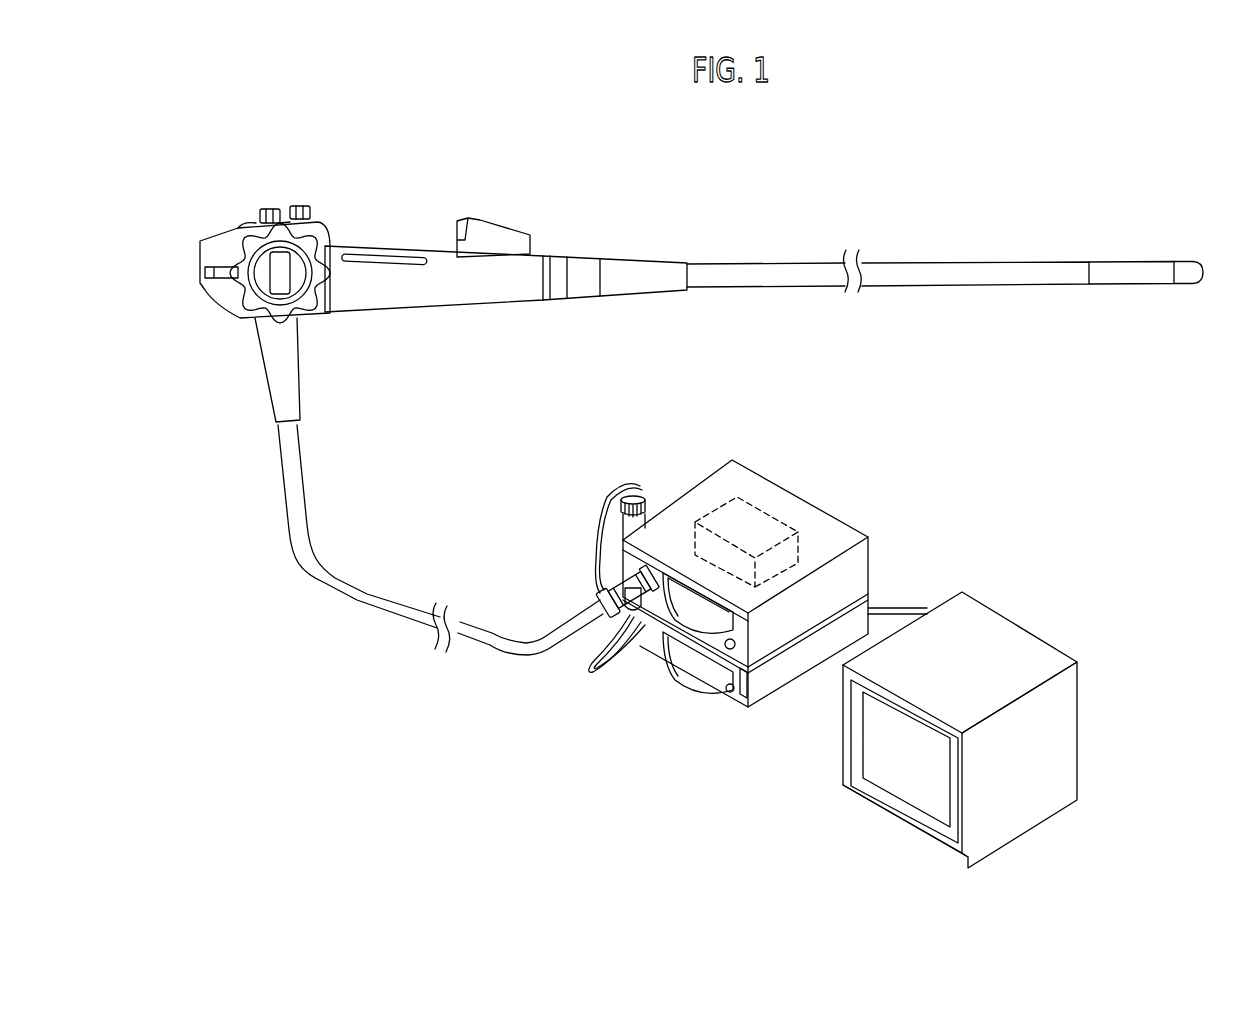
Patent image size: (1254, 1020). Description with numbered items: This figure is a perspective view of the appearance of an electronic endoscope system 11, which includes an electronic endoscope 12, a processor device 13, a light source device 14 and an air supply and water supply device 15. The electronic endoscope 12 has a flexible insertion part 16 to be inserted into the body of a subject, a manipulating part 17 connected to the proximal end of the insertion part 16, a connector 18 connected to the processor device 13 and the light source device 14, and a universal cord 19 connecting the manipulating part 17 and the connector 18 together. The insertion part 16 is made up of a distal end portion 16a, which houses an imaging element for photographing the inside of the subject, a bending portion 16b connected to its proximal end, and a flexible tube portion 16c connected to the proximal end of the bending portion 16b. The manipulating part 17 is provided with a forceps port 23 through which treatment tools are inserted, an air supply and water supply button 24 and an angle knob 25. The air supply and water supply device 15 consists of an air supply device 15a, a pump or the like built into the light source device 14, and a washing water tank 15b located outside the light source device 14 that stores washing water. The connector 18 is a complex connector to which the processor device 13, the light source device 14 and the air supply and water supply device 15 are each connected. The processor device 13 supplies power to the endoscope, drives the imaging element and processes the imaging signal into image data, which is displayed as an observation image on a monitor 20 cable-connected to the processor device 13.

The electronic endoscope system 11 is at (310, 728).
The electronic endoscope 12 is at (693, 253).
The processor device 13 is at (722, 692).
The light source device 14 is at (797, 516).
The air supply and water supply device 15 is at (624, 405).
The air supply device 15a is at (713, 507).
The washing water tank 15b is at (643, 495).
The insertion part 16 is at (1218, 326).
The distal end portion 16a is at (1192, 282).
The bending portion 16b is at (1122, 276).
The flexible tube portion 16c is at (921, 275).
The manipulating part 17 is at (409, 297).
The connector 18 is at (596, 602).
The universal cord 19 is at (302, 497).
The monitor 20 is at (995, 635).
The forceps port 23 is at (457, 218).
The air supply and water supply button 24 is at (298, 208).
The angle knob 25 is at (240, 316).